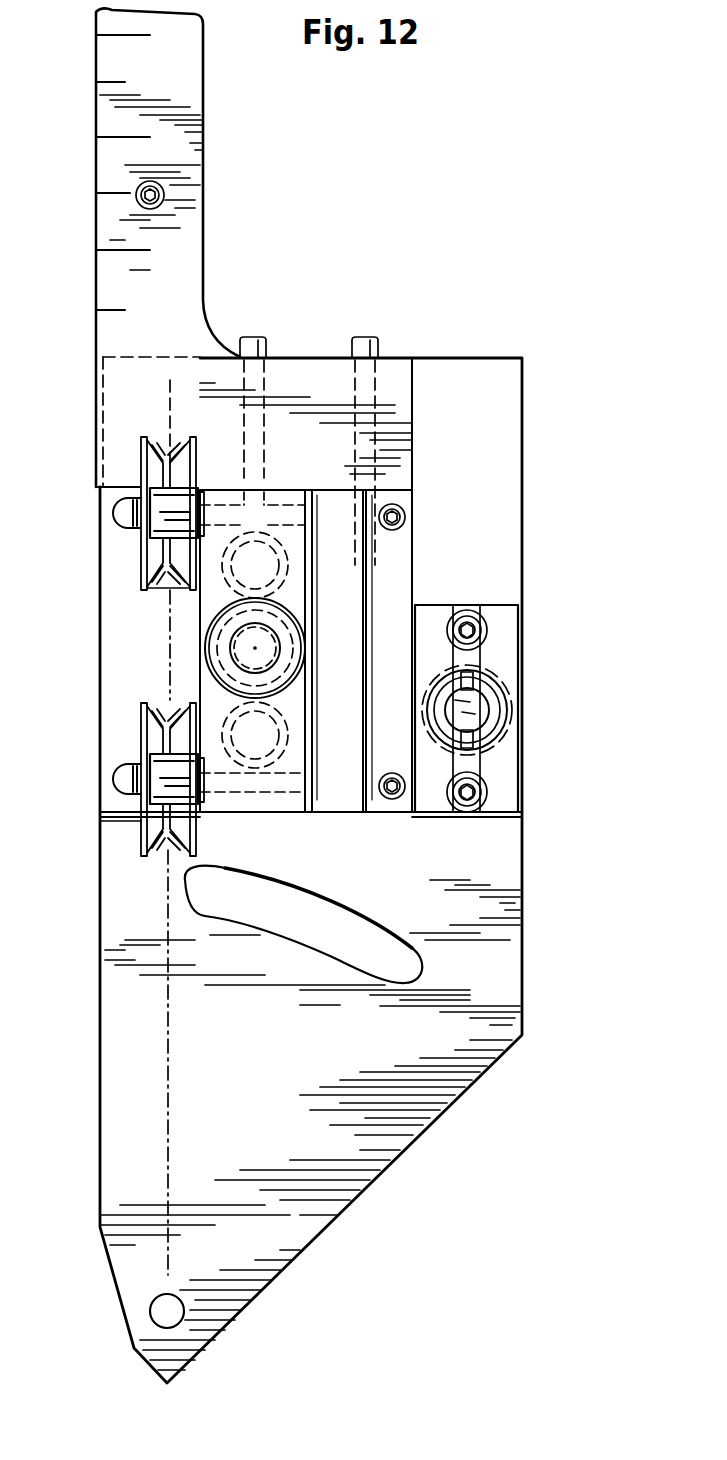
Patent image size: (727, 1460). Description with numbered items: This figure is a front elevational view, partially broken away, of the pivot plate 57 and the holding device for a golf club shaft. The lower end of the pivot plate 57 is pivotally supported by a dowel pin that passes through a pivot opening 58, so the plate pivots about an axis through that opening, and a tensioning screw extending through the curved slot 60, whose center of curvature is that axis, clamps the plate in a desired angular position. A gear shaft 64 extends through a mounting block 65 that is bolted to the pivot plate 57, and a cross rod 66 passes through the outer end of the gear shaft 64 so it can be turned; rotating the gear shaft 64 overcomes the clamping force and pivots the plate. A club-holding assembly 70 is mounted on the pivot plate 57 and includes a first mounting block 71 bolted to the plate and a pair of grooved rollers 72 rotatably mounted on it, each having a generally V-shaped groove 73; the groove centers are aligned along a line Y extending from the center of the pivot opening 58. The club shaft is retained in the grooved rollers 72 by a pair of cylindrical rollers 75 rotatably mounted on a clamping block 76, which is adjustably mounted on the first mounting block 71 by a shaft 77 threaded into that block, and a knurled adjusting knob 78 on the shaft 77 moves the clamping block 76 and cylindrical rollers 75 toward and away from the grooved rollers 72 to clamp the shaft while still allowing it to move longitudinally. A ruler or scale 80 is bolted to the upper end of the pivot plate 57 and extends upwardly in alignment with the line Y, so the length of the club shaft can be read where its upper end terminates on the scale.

The pivot plate 57 is at (370, 1160).
The pivot opening 58 is at (185, 1300).
The curved slot 60 is at (288, 915).
The gear shaft 64 is at (470, 720).
The mounting block 65 is at (505, 630).
The cross rod 66 is at (478, 680).
The club-holding assembly 70 is at (117, 836).
The first mounting block 71 is at (398, 568).
The grooved rollers 72 is at (140, 568).
The V-shaped groove 73 is at (178, 590).
The cylindrical rollers 75 is at (141, 475).
The clamping block 76 is at (278, 500).
The shaft 77 is at (265, 655).
The knurled adjusting knob 78 is at (275, 632).
The ruler or scale 80 is at (178, 78).
The line Y is at (168, 1100).